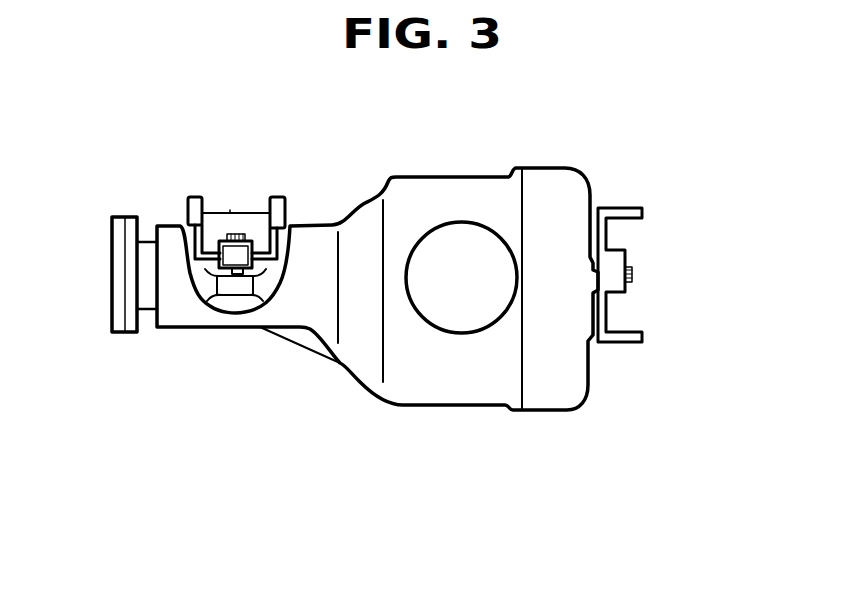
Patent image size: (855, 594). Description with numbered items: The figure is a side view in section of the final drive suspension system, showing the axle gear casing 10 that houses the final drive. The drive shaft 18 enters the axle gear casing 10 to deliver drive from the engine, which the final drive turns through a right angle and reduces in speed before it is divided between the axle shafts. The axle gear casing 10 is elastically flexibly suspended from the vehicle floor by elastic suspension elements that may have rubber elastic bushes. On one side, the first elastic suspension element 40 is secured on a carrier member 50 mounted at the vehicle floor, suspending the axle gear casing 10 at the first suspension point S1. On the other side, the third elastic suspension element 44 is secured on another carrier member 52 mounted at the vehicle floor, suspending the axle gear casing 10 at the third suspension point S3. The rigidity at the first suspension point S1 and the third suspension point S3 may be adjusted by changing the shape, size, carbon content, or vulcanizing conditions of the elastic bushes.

The axle gear casing 10 is at (467, 418).
The drive shaft 18 is at (147, 298).
The first elastic suspension element 40 is at (238, 262).
The carrier member 50 is at (197, 203).
The first suspension point S1 is at (247, 212).
The carrier member 52 is at (632, 207).
The third elastic suspension element 44 is at (615, 295).
The third suspension point S3 is at (650, 265).